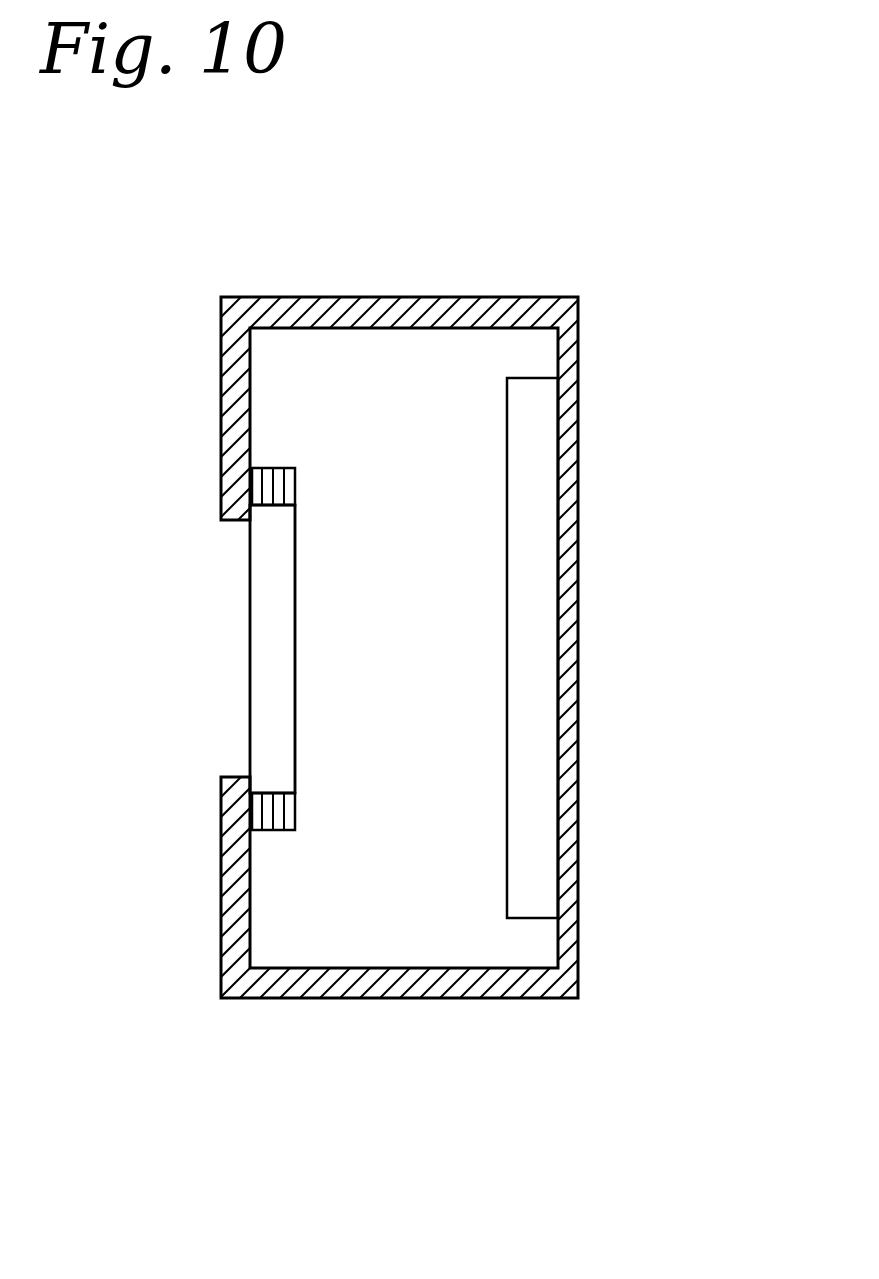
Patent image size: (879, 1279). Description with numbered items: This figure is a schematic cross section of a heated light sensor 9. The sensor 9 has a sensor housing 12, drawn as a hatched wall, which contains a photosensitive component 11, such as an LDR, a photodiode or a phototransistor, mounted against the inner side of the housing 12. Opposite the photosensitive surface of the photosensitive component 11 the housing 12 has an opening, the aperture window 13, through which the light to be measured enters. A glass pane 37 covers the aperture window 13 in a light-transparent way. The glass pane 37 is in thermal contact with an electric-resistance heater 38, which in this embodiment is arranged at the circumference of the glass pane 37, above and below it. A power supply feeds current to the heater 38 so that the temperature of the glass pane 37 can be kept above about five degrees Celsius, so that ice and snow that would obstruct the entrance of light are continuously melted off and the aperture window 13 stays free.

The light sensor 9 is at (398, 1066).
The photosensitive component 11 is at (538, 642).
The sensor housing 12 is at (532, 296).
The aperture window 13 is at (250, 708).
The glass pane 37 is at (270, 623).
The electric-resistance heater 38 is at (252, 482).